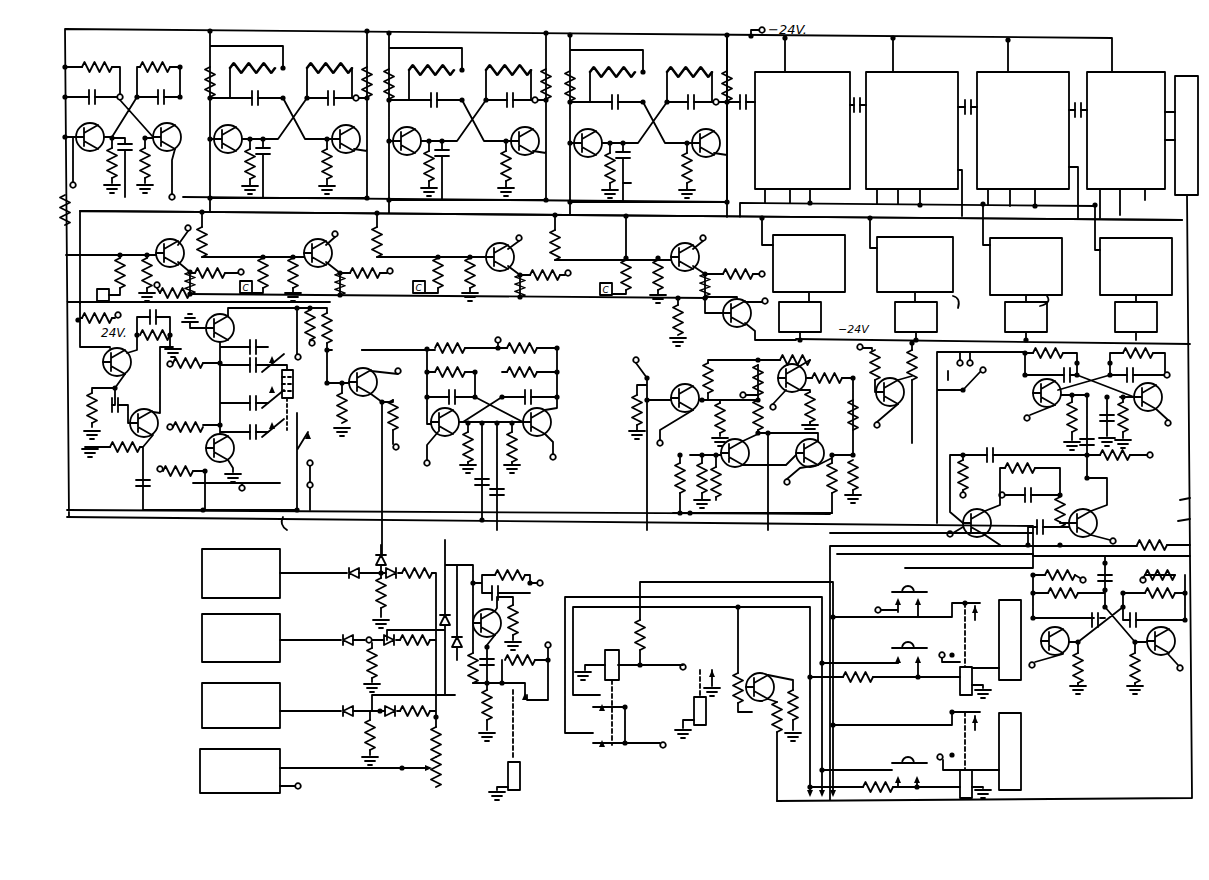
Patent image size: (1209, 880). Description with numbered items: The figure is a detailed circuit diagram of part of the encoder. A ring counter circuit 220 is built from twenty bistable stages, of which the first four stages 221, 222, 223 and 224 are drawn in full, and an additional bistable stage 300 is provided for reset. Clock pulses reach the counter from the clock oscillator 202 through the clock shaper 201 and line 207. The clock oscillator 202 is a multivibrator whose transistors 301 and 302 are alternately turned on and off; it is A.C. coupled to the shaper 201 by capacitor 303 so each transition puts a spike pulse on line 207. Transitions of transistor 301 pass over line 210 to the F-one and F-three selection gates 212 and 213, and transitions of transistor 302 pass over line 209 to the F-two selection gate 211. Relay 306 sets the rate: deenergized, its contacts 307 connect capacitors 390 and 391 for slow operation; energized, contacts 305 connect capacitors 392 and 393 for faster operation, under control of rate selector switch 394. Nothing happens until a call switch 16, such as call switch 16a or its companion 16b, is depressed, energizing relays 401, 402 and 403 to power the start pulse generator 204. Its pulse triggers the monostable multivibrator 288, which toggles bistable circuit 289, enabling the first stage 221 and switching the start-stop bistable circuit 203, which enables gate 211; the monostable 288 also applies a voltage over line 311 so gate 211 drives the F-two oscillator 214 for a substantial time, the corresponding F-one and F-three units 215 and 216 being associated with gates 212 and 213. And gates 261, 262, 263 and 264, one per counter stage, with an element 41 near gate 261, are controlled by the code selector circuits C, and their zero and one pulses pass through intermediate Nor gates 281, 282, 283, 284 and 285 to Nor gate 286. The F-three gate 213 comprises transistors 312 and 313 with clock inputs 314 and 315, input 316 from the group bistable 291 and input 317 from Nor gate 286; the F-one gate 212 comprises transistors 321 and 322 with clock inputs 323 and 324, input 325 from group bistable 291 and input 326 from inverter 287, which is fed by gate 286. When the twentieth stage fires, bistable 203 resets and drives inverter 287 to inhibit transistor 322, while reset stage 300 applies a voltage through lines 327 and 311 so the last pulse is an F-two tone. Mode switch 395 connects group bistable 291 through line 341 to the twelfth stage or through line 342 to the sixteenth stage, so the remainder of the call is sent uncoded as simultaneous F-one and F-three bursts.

The call switch 16 is at (876, 652).
The call switch 16a is at (904, 643).
The switch contact 16b is at (914, 762).
The resistor 41 is at (188, 262).
The clock shaper 201 is at (111, 462).
The clock oscillator 202 is at (258, 490).
The start-stop bistable circuit 203 is at (478, 358).
The start pulse generator 204 is at (517, 624).
The line 207 is at (87, 246).
The line 209 is at (278, 332).
The line 210 is at (295, 528).
The F2 selection gate 211 is at (373, 358).
The F1 selection gate 212 is at (652, 356).
The F3 selection gate 213 is at (782, 443).
The F2 oscillator 214 is at (283, 590).
The filter F1 215 is at (283, 648).
The filter F3 216 is at (283, 717).
The ring counter circuit 220 is at (1072, 60).
The first bistable stage 221 is at (120, 58).
The bistable stage 222 is at (295, 58).
The bistable stage 223 is at (475, 58).
The bistable stage 224 is at (655, 58).
The And gate 261 is at (160, 247).
The And gate 262 is at (306, 249).
The And gate 263 is at (486, 251).
The And gate 264 is at (668, 251).
The intermediate Nor gate 281 is at (722, 320).
The intermediate Nor gate 282 is at (802, 278).
The intermediate Nor gate 283 is at (910, 278).
The intermediate Nor gate 284 is at (1021, 271).
The intermediate Nor gate 285 is at (1132, 271).
The Nor gate 286 is at (890, 442).
The inverter circuit 287 is at (776, 359).
The monostable multivibrator circuit 288 is at (1125, 501).
The bistable circuit 289 is at (1033, 400).
The group bistable circuit 291 is at (1108, 645).
The reset bistable stage 300 is at (1185, 80).
The transistor 301 is at (206, 452).
The transistor 302 is at (203, 328).
The capacitor 303 is at (139, 487).
The relay contacts 305 is at (272, 402).
The relay 306 is at (297, 397).
The relay contacts 307 is at (272, 354).
The line 311 is at (871, 533).
The transistor 312 is at (743, 464).
The transistor 313 is at (815, 469).
The input 314 is at (678, 470).
The input 315 is at (803, 485).
The input 316 is at (718, 498).
The input 317 is at (819, 412).
The transistor 321 is at (598, 380).
The transistor 322 is at (671, 415).
The input 323 is at (638, 393).
The input 324 is at (716, 420).
The input 325 is at (655, 418).
The input 326 is at (722, 378).
The line 327 is at (1168, 520).
The line 341 is at (944, 310).
The line 342 is at (1054, 311).
The capacitor 390 is at (239, 349).
The capacitor 391 is at (246, 440).
The capacitor 392 is at (239, 404).
The capacitor 393 is at (239, 367).
The rate selector switch 394 is at (300, 458).
The mode selector switch 395 is at (972, 396).
The relay 401 is at (960, 695).
The relay 402 is at (612, 655).
The relay 403 is at (508, 766).